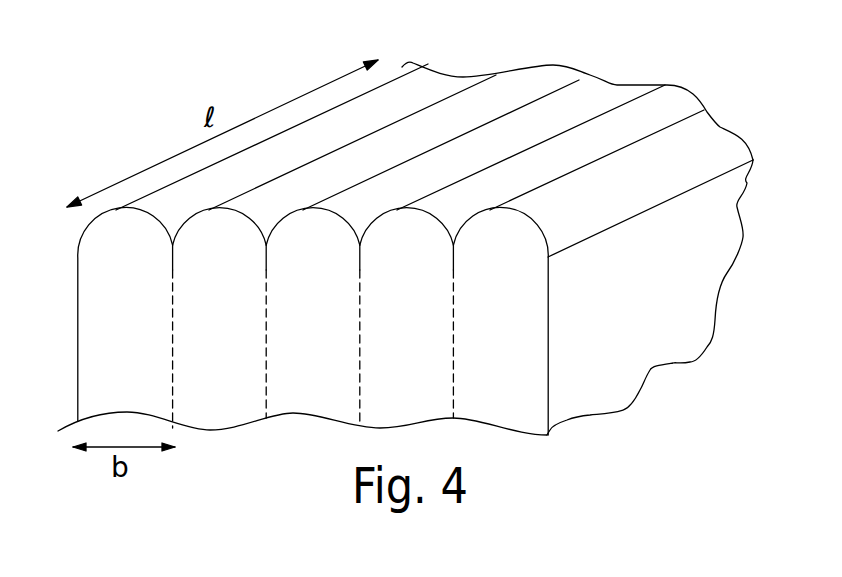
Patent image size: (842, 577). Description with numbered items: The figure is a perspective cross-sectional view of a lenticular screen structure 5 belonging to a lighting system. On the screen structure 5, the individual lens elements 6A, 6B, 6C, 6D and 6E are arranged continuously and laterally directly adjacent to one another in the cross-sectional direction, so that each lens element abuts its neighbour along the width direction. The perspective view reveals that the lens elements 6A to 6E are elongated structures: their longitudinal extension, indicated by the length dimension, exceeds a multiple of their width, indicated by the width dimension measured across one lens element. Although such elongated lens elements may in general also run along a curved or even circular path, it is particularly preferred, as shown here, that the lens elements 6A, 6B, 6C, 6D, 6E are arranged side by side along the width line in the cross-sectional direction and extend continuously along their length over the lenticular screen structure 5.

The lenticular screen structure 5 is at (558, 383).
The lens element 6A is at (253, 242).
The lens element 6B is at (334, 251).
The lens element 6C is at (422, 249).
The lens element 6D is at (512, 255).
The lens element 6E is at (578, 272).